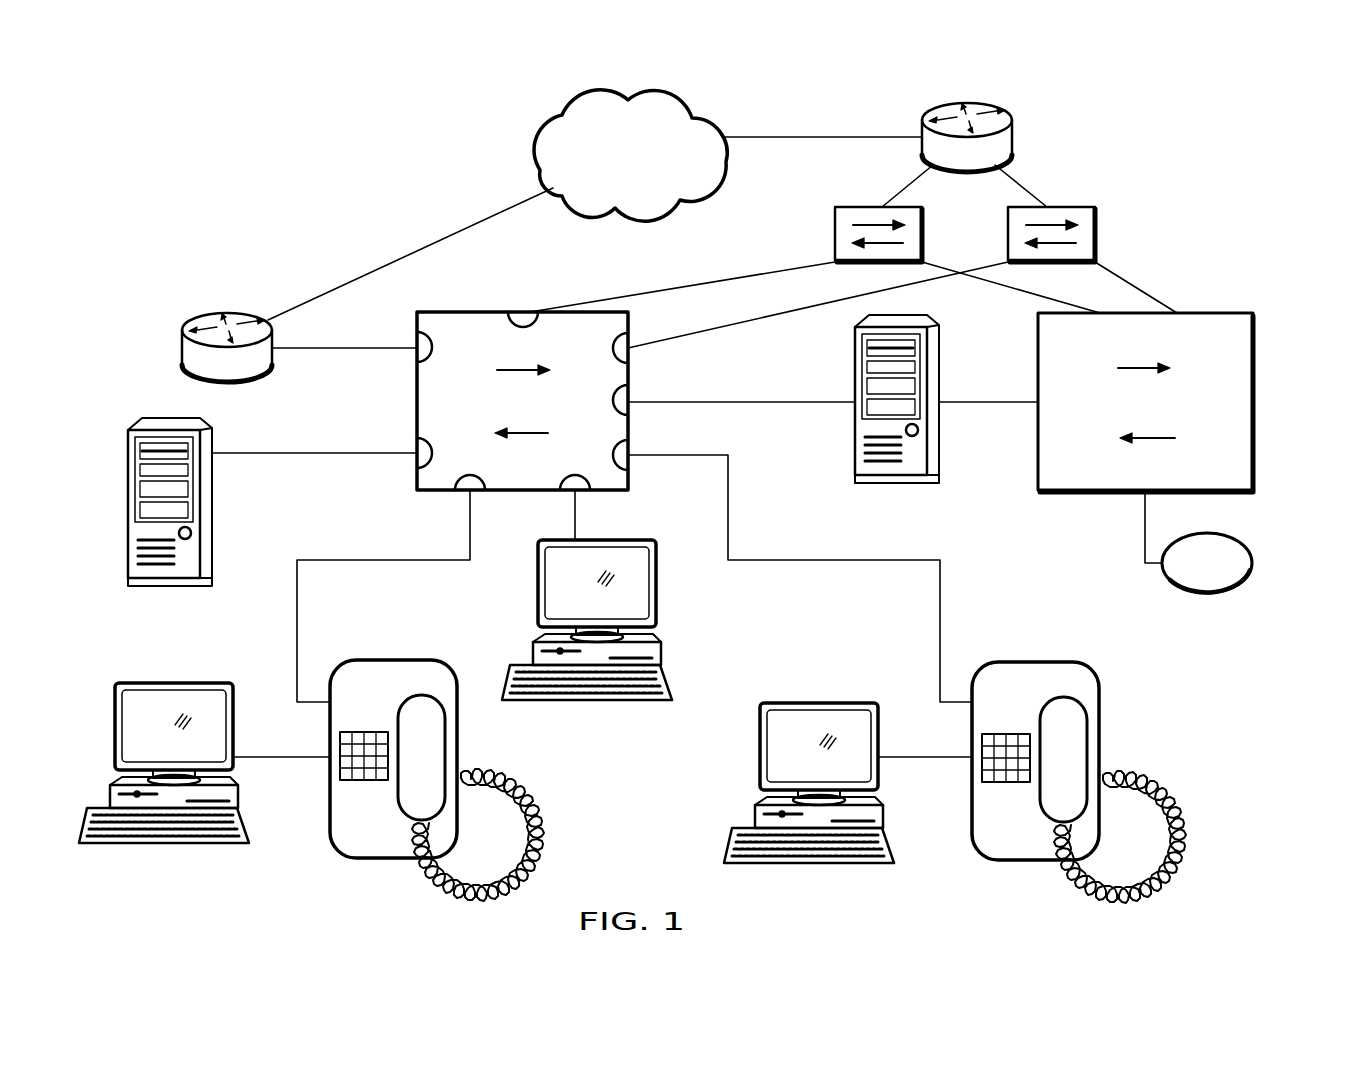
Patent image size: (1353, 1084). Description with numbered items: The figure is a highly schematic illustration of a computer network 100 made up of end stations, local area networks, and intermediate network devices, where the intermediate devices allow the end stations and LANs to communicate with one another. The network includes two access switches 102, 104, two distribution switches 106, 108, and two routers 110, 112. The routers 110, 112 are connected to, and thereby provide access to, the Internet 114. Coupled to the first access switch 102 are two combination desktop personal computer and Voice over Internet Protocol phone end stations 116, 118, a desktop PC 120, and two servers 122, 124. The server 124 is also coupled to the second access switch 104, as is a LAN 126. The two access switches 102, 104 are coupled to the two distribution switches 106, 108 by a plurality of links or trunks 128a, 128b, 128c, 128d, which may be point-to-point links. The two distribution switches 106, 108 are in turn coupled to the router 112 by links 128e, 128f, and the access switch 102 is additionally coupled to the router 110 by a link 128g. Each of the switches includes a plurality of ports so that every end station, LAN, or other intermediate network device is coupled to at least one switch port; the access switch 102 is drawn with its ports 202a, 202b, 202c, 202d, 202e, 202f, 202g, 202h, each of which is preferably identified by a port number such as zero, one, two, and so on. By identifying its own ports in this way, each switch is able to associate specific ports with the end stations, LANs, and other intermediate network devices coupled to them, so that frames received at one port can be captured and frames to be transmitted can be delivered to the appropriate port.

The computer network 100 is at (1181, 156).
The access switch 102 is at (467, 312).
The access switch 104 is at (1253, 383).
The distribution switch 106 is at (922, 237).
The distribution switch 108 is at (1095, 237).
The router 110 is at (272, 339).
The router 112 is at (1012, 141).
The Internet 114 is at (728, 180).
The combination desktop personal computer and VoIP phone 116 is at (235, 737).
The combination desktop personal computer and VoIP phone 118 is at (878, 737).
The desktop PC 120 is at (655, 613).
The server 122 is at (212, 520).
The server 124 is at (940, 456).
The LAN 126 is at (1252, 565).
The link 128a is at (788, 270).
The link 128b is at (757, 320).
The link 128c is at (975, 278).
The link 128d is at (1140, 290).
The link 128e is at (910, 184).
The link 128f is at (1018, 184).
The link 128g is at (391, 345).
The port 202a is at (426, 340).
The port 202b is at (455, 424).
The port 202c is at (486, 466).
The port 202d is at (564, 479).
The port 202e is at (615, 447).
The port 202f is at (615, 392).
The port 202g is at (614, 343).
The port 202h is at (536, 323).